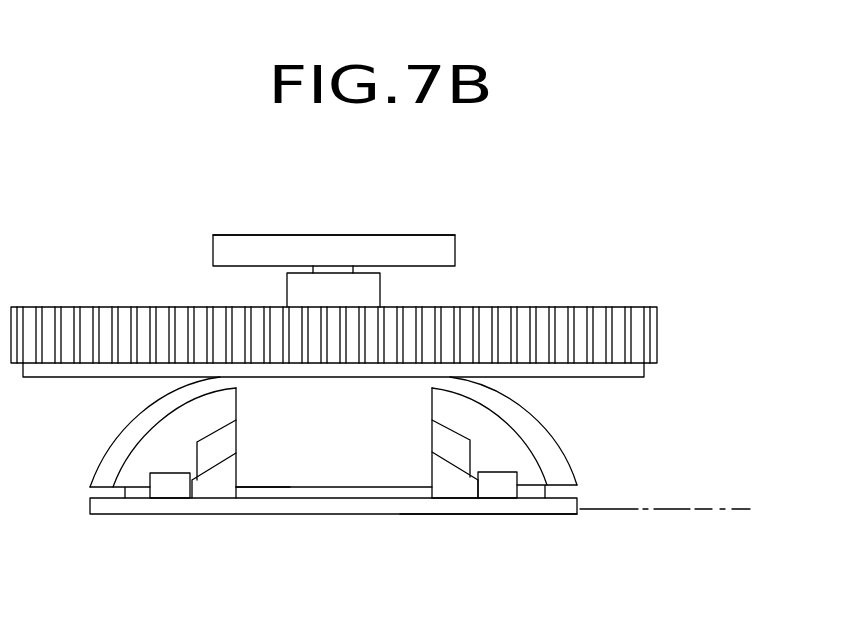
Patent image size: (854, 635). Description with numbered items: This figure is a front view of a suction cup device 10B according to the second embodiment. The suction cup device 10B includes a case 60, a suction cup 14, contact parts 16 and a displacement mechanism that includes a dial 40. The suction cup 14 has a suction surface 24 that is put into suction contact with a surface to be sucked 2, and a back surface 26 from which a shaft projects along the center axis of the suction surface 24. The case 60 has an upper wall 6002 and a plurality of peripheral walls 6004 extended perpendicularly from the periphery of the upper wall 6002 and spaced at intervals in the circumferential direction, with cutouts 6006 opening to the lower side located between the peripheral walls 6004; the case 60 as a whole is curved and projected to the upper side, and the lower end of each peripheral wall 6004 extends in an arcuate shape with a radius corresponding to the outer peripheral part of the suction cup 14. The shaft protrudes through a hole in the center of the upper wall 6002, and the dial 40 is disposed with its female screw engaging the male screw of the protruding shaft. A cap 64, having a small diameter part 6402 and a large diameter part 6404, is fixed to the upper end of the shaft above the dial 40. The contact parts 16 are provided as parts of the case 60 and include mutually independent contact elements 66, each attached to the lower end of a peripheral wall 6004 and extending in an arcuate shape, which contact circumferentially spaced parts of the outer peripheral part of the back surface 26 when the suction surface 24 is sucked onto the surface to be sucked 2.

The suction cup device 10B is at (558, 226).
The cap 64 is at (406, 250).
The large diameter part 6404 is at (248, 235).
The small diameter part 6402 is at (287, 292).
The dial 40 is at (605, 307).
The upper wall 6002 is at (397, 397).
The cutouts 6006 is at (162, 452).
The case 60 is at (530, 435).
The peripheral walls 6004 is at (353, 458).
The contact elements 66 is at (168, 492).
The contact parts 16 is at (502, 483).
The suction cup 14 is at (218, 507).
The back surface 26 is at (440, 498).
The suction surface 24 is at (485, 500).
The surface to be sucked 2 is at (695, 508).